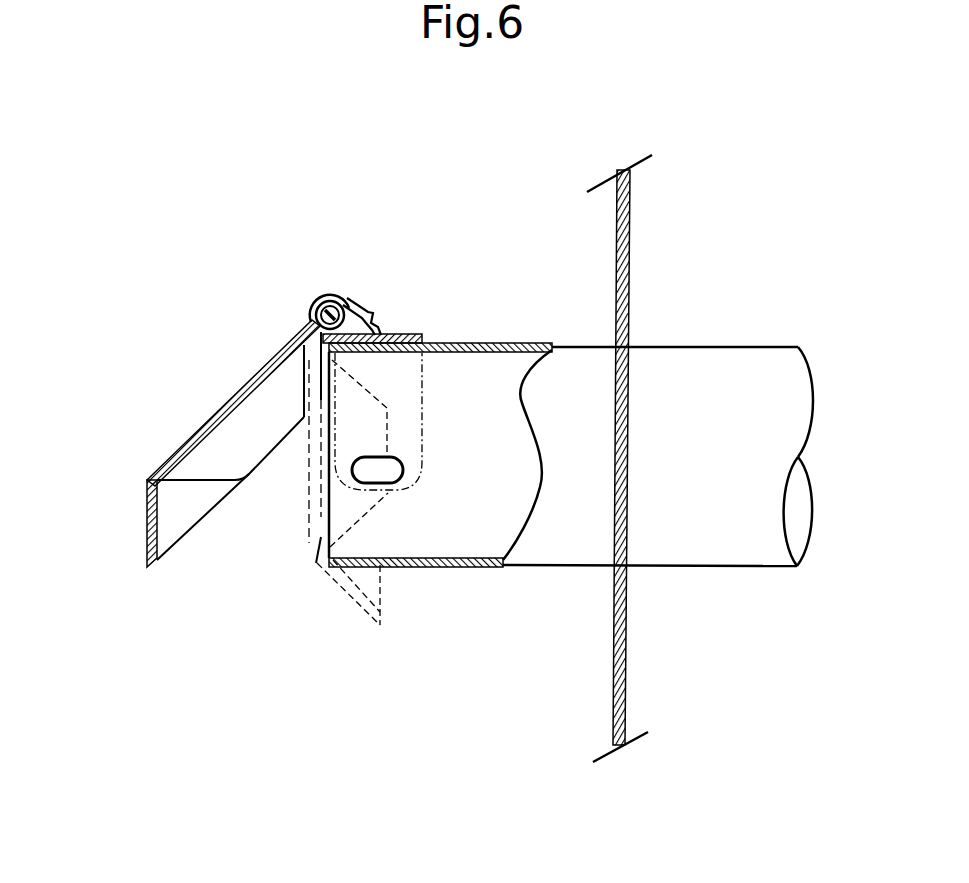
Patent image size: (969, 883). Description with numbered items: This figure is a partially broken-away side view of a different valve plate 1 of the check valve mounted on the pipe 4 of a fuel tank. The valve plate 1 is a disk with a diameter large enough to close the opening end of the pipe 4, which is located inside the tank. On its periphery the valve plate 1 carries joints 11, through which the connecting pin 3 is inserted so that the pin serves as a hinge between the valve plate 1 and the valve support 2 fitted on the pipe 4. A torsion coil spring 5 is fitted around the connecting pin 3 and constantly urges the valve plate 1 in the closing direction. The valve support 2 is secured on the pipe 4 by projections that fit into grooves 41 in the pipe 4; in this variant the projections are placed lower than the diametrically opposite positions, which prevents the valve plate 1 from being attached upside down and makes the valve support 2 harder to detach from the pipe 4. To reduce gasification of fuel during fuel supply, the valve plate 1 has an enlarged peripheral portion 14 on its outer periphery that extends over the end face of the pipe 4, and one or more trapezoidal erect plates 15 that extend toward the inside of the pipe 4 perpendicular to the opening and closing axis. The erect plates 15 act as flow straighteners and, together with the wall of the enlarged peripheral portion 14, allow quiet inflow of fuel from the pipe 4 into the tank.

The valve plate 1 is at (217, 407).
The valve support 2 is at (398, 333).
The connecting pin 3 is at (335, 297).
The pipe 4 is at (462, 347).
The torsion coil spring 5 is at (366, 308).
The joint 11 is at (347, 309).
The enlarged peripheral portion 14 is at (147, 540).
The erect plate 15 is at (247, 458).
The groove 41 is at (387, 487).